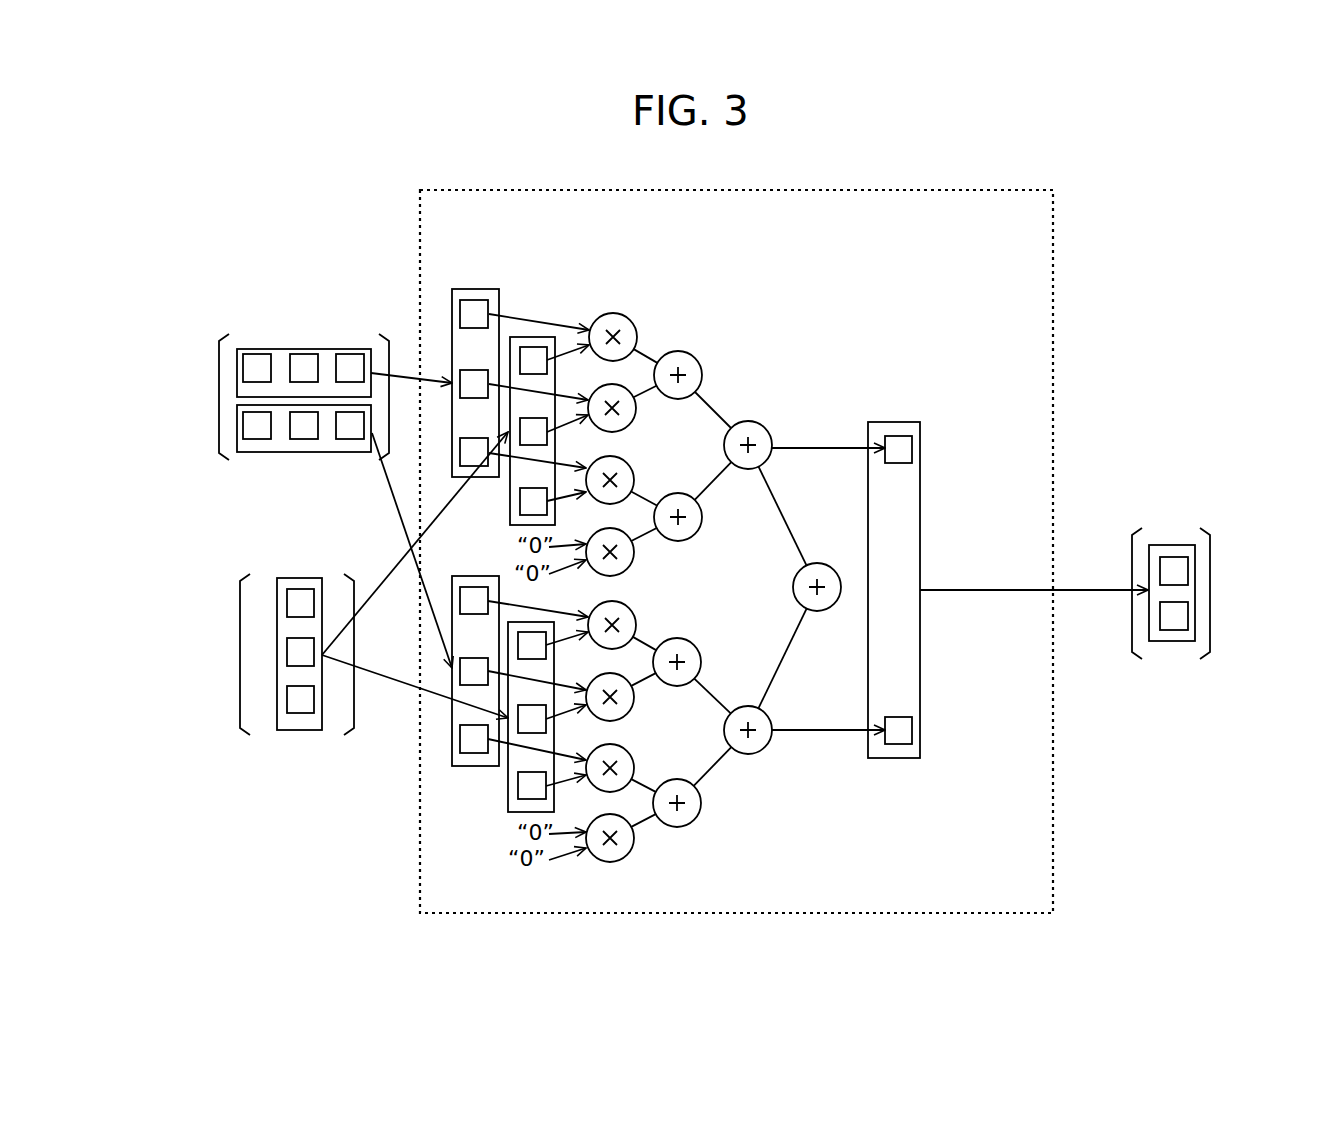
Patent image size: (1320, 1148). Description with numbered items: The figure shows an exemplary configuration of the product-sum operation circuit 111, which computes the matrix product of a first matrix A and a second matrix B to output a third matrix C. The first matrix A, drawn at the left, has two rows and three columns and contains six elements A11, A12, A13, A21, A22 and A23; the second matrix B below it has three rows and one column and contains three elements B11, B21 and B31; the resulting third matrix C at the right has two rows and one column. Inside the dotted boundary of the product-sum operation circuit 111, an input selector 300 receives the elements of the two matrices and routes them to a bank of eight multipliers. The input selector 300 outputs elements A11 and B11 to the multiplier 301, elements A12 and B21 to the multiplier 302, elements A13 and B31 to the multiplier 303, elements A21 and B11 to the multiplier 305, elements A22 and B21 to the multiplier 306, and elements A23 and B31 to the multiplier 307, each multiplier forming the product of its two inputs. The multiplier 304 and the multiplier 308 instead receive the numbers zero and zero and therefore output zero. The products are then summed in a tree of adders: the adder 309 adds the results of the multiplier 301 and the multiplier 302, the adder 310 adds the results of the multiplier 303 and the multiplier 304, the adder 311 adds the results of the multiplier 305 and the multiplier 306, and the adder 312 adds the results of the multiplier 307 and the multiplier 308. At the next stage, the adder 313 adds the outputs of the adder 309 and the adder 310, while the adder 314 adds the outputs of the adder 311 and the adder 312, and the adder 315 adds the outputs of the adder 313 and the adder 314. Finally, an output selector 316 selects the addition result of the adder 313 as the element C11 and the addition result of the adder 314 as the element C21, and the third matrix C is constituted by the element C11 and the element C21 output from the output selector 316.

The product-sum operation circuit 111 is at (929, 194).
The input selector 300 is at (470, 289).
The multiplier 301 is at (617, 313).
The multiplier 302 is at (636, 412).
The multiplier 303 is at (632, 466).
The multiplier 304 is at (634, 556).
The multiplier 305 is at (636, 616).
The multiplier 306 is at (634, 700).
The multiplier 307 is at (634, 754).
The multiplier 308 is at (634, 843).
The adder 309 is at (680, 351).
The adder 310 is at (702, 518).
The adder 311 is at (700, 650).
The adder 312 is at (700, 806).
The adder 313 is at (750, 421).
The adder 314 is at (754, 707).
The adder 315 is at (822, 563).
The output selector 316 is at (922, 500).
The first matrix A is at (287, 397).
The element of first matrix A11 is at (254, 352).
The element of first matrix A12 is at (304, 352).
The element of first matrix A13 is at (356, 352).
The element of first matrix A21 is at (252, 440).
The element of first matrix A22 is at (303, 440).
The element of first matrix A23 is at (350, 440).
The second matrix B is at (266, 654).
The element of second matrix B11 is at (304, 588).
The element of second matrix B21 is at (287, 654).
The element of second matrix B31 is at (300, 713).
The third matrix C is at (1186, 593).
The element of third matrix C11 is at (1174, 556).
The element of third matrix C21 is at (1172, 630).